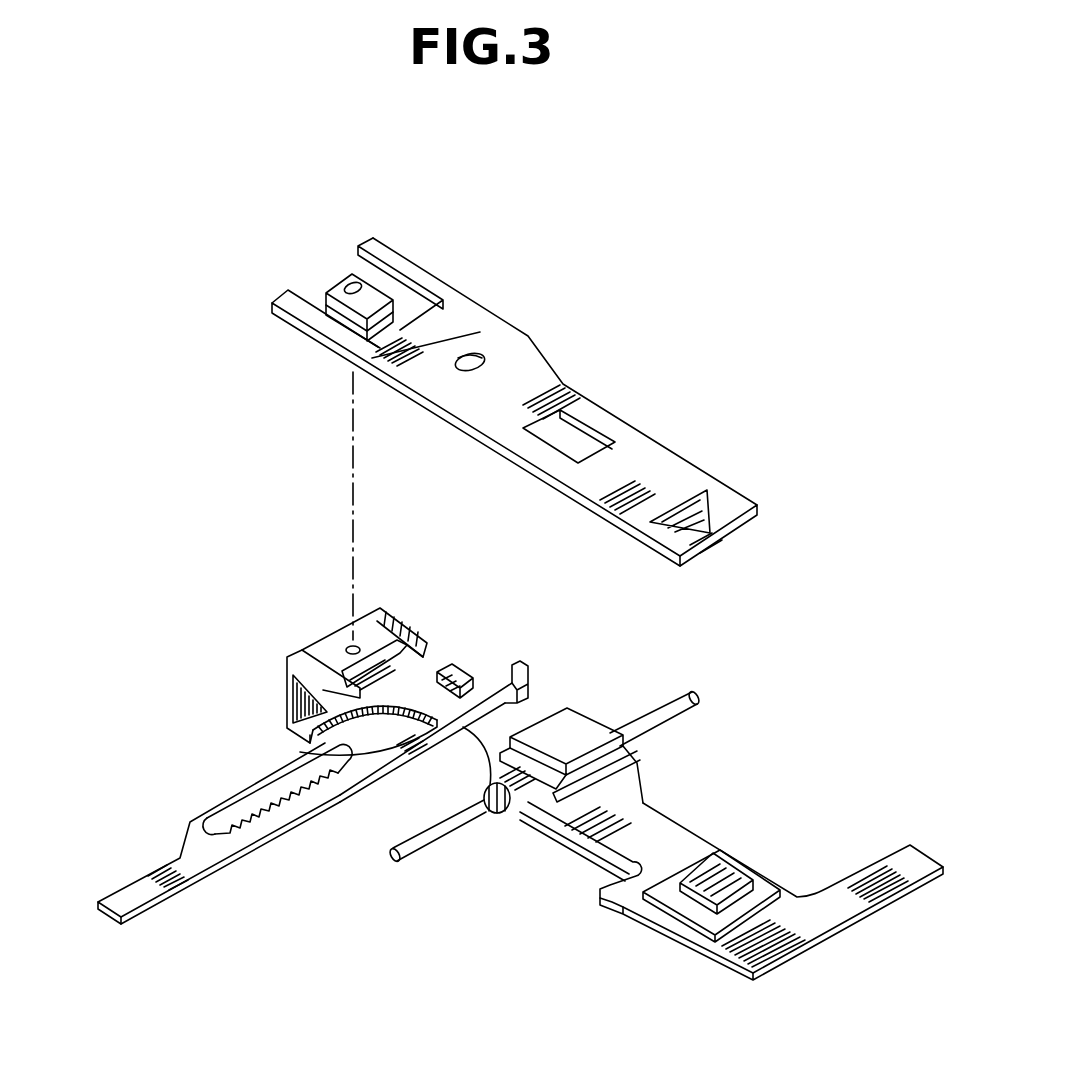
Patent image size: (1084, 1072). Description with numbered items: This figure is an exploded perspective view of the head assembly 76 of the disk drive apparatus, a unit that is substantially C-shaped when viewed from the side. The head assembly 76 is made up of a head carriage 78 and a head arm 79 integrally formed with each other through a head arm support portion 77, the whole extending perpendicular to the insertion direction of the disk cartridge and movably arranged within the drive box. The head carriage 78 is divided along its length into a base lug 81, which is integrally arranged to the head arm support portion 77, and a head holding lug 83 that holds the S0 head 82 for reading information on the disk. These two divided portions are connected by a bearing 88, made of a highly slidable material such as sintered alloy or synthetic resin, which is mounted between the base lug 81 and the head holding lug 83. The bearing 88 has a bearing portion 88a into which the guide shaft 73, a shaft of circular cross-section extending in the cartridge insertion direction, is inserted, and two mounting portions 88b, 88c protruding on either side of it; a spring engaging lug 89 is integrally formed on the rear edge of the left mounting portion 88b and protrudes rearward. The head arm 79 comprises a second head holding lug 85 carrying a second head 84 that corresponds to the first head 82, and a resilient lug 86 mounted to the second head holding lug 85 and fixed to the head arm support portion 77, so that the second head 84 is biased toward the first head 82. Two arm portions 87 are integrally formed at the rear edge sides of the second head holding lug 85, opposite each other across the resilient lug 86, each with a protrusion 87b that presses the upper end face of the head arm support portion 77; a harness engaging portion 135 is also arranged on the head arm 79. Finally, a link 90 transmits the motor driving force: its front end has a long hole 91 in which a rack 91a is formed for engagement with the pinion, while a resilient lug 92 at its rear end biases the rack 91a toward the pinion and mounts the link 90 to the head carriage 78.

The guide shaft 73 is at (673, 710).
The head assembly 76 is at (307, 617).
The head arm support portion 77 is at (292, 660).
The head carriage 78 is at (460, 747).
The head arm 79 is at (668, 430).
The base lug 81 is at (440, 668).
The S0 head 82 is at (733, 873).
The head holding lug 83 is at (667, 837).
The second head 84 is at (730, 533).
The second head holding lug 85 is at (687, 457).
The resilient lug 86 is at (326, 290).
The arm portions 87 is at (422, 277).
The protrusion 87b is at (350, 260).
The bearing 88 is at (600, 708).
The bearing portion 88a is at (500, 817).
The mounting portion 88b is at (397, 853).
The mounting portion 88c is at (683, 694).
The spring engaging lug 89 is at (563, 710).
The link 90 is at (368, 770).
The long hole 91 is at (212, 820).
The rack 91a is at (270, 817).
The resilient lug 92 is at (525, 668).
The harness engaging portion 135 is at (583, 427).